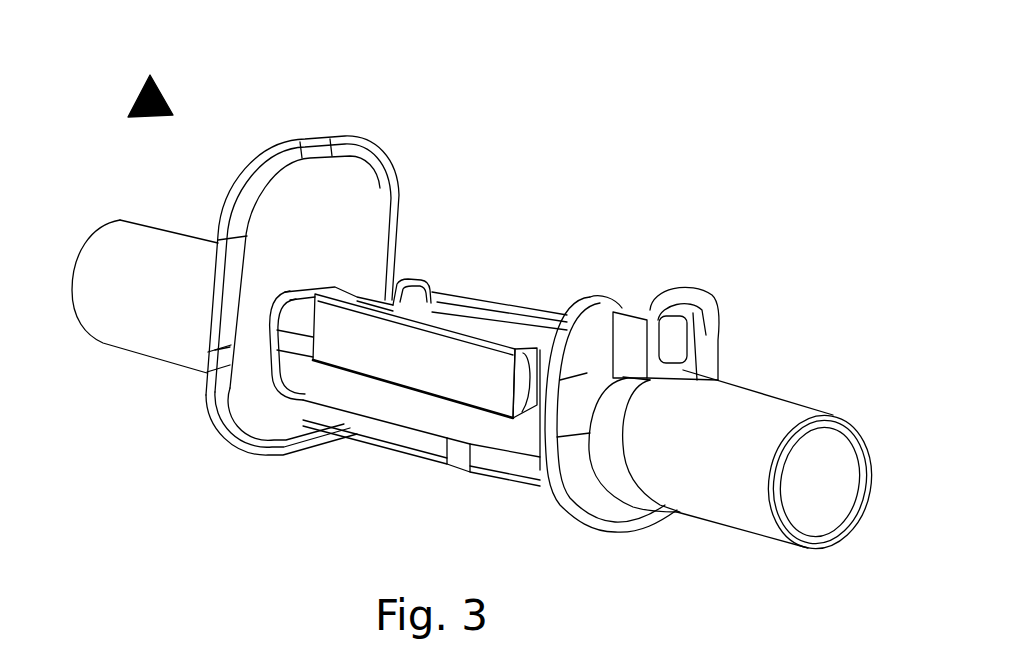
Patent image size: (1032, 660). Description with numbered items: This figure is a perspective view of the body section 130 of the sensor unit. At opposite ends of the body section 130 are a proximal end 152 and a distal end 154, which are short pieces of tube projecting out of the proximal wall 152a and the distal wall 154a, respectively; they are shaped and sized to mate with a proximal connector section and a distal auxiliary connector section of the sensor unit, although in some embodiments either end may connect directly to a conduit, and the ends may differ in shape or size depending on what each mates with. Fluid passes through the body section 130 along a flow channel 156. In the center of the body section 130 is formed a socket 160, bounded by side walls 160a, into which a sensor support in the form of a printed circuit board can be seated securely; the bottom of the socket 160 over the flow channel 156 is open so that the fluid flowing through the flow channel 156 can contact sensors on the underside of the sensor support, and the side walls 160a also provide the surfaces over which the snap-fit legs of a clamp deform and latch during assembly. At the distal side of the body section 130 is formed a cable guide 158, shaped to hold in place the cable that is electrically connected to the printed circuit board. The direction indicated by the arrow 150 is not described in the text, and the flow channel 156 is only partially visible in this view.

The body section 130 is at (605, 95).
The insertion direction 150 is at (142, 100).
The proximal end 152 is at (148, 354).
The proximal wall 152a is at (279, 205).
The distal end 154 is at (703, 517).
The distal wall 154a is at (588, 330).
The flow channel 156 is at (832, 498).
The cable guide 158 is at (673, 340).
The socket 160 is at (490, 308).
The side walls 160a is at (457, 305).